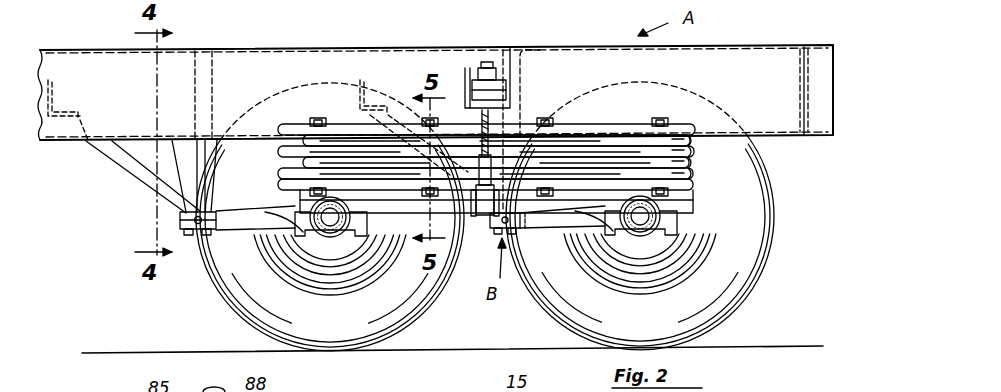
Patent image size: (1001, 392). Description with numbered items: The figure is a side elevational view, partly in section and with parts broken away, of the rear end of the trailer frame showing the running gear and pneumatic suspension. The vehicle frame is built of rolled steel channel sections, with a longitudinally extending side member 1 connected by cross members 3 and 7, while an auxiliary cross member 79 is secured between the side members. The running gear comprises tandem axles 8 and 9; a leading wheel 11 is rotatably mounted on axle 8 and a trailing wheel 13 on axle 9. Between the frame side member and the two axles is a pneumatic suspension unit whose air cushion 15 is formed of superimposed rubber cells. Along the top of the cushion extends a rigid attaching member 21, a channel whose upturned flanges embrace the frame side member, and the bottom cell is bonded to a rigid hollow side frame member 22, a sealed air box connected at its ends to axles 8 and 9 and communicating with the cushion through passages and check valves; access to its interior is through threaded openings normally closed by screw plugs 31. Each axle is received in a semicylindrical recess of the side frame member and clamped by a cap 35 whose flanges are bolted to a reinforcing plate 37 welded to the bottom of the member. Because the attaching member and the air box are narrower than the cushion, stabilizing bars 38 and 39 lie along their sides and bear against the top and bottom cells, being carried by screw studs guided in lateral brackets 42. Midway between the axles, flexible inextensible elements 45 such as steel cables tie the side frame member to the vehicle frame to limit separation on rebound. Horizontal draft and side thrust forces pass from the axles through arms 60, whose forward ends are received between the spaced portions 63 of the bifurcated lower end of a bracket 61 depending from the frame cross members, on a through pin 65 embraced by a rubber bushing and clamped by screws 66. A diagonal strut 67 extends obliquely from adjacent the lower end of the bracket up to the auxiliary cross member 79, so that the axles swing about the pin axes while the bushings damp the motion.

The side member 1 is at (766, 54).
The cross member 3 is at (194, 82).
The cross member 7 is at (803, 100).
The axle 8 is at (340, 233).
The axle 9 is at (650, 238).
The wheel 11 is at (422, 303).
The wheel 13 is at (752, 276).
The air cushion 15 is at (509, 136).
The rigid attaching member 21 is at (330, 124).
The side frame member 22 is at (398, 210).
The screw plug 31 is at (446, 232).
The cap 35 is at (327, 238).
The reinforcing plate 37 is at (262, 212).
The stabilizing bar 38 is at (588, 129).
The stabilizing bar 39 is at (694, 170).
The lateral bracket 42 is at (548, 130).
The flexible inextensible element 45 is at (500, 127).
The arm 60 is at (248, 235).
The bracket 61 is at (208, 168).
The spaced portion 63 is at (180, 218).
The through pin 65 is at (200, 236).
The screw 66 is at (184, 234).
The diagonal strut 67 is at (134, 174).
The auxiliary cross member 79 is at (52, 98).